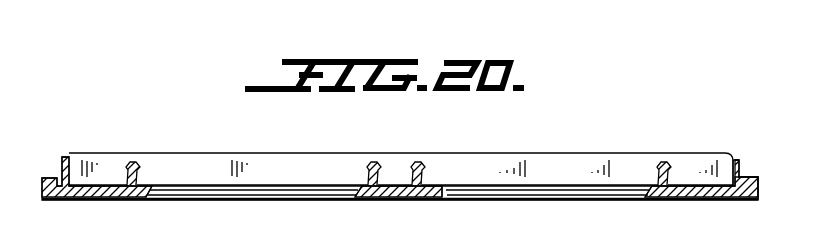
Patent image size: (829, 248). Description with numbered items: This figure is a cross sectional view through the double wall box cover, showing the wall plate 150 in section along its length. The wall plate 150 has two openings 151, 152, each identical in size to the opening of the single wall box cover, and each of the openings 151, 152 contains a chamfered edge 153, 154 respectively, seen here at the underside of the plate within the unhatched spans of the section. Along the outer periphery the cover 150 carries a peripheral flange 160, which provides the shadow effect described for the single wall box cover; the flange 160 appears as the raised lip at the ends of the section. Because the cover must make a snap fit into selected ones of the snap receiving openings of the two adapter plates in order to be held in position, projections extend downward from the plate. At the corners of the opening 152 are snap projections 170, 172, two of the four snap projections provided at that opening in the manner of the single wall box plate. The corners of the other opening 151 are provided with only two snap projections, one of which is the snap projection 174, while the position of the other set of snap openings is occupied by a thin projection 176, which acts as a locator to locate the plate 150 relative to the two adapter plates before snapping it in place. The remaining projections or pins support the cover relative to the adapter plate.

The wall plate 150 is at (638, 90).
The opening 151 is at (155, 184).
The opening 152 is at (447, 185).
The chamfered edge 153 is at (160, 200).
The chamfered edge 154 is at (443, 197).
The peripheral flange 160 is at (737, 163).
The snap projection 170 is at (416, 162).
The snap projection 172 is at (663, 162).
The snap projection 174 is at (140, 163).
The thin projection 176 is at (371, 164).